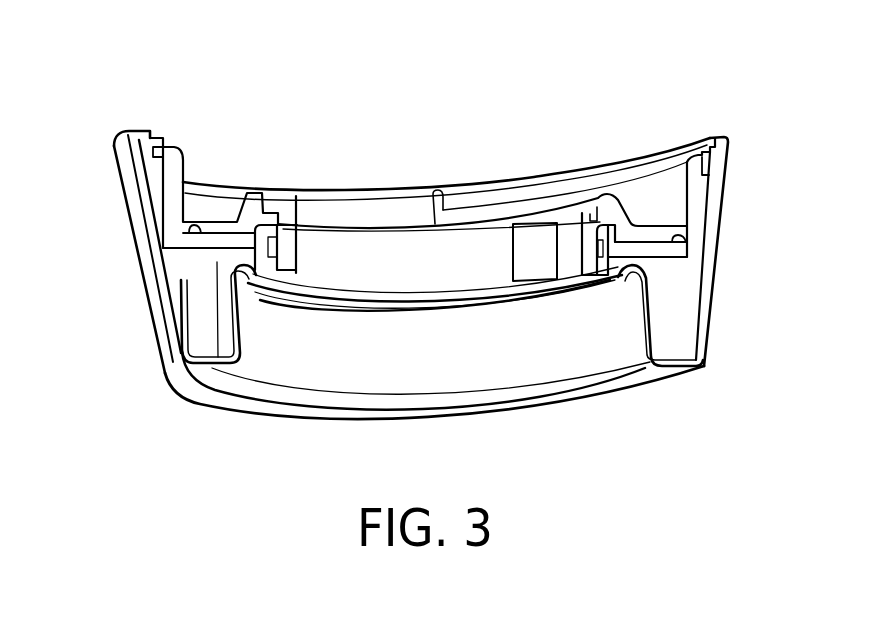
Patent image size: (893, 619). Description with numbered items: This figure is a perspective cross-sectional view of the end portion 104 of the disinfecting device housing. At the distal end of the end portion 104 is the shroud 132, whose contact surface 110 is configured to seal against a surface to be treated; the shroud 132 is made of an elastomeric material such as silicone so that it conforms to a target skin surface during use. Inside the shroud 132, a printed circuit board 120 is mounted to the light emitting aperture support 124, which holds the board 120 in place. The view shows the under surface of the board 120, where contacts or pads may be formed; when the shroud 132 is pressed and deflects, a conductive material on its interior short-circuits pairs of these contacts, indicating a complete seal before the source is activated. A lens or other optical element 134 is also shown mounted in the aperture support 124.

The end portion 104 is at (88, 86).
The contact surface 110 is at (655, 378).
The printed circuit board 120 is at (172, 279).
The light emitting aperture support 124 is at (700, 213).
The shroud 132 is at (133, 218).
The lens or other optical element 134 is at (533, 243).